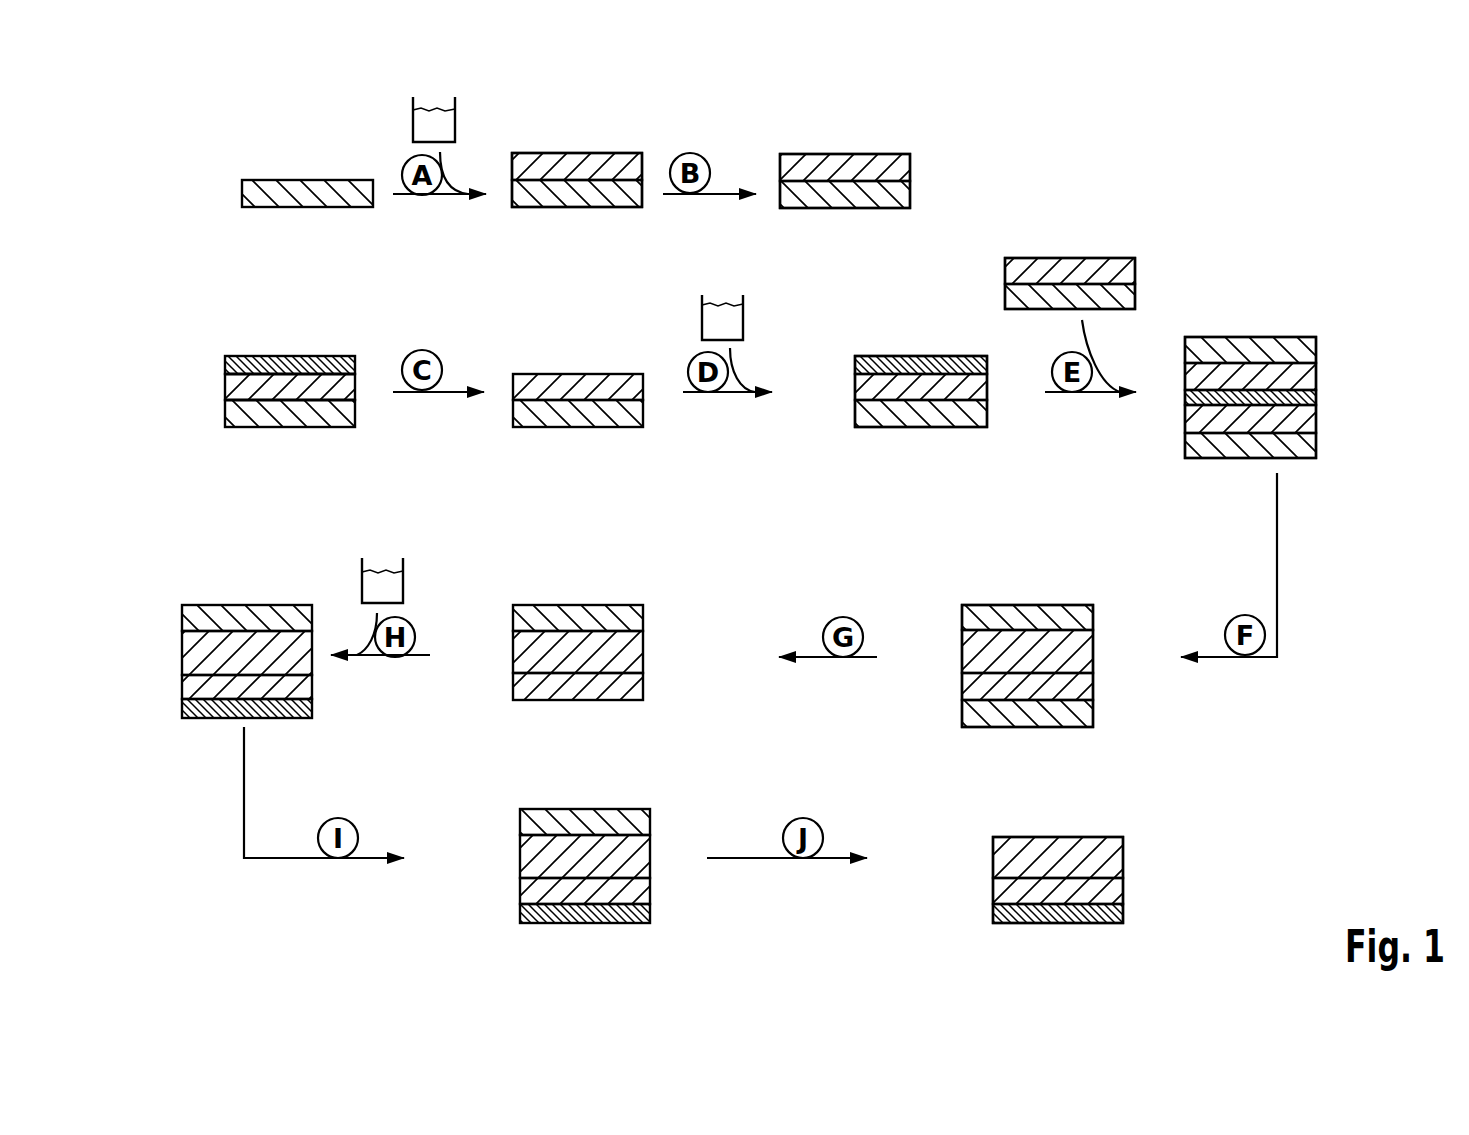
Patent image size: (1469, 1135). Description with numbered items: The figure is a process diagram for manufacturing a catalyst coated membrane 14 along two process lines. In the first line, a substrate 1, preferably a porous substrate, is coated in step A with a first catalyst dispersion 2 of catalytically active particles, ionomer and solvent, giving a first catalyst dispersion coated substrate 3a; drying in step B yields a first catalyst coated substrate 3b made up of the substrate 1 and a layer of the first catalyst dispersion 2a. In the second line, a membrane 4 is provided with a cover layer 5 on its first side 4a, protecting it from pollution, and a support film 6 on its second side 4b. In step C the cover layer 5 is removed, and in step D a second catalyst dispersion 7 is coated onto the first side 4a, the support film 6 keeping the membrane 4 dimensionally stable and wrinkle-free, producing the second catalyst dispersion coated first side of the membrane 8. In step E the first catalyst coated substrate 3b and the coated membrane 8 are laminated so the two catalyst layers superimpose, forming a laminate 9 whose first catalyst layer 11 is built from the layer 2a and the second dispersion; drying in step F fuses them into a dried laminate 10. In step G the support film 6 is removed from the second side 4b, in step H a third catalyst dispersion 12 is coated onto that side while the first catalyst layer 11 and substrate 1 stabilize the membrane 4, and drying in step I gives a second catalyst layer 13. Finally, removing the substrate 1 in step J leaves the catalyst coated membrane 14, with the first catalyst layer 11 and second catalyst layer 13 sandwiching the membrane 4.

The substrate 1 is at (283, 195).
The first catalyst dispersion 2 is at (425, 125).
The layer of the first catalyst dispersion 2a is at (820, 167).
The first catalyst dispersion coated substrate 3a is at (621, 141).
The first catalyst coated substrate 3b is at (889, 142).
The membrane 4 is at (237, 390).
The first side of the membrane 4a is at (300, 372).
The second side of the membrane 4b is at (323, 407).
The cover layer 5 is at (237, 363).
The support film 6 is at (265, 413).
The second catalyst dispersion 7 is at (715, 322).
The second catalyst dispersion coated first side of the membrane 8 is at (999, 398).
The laminate 9 is at (1308, 320).
The dried laminate 10 is at (1084, 594).
The first catalyst layer 11 is at (1405, 332).
The third catalyst dispersion 12 is at (393, 587).
The second catalyst layer 13 is at (519, 912).
The catalyst coated membrane 14 is at (1126, 824).